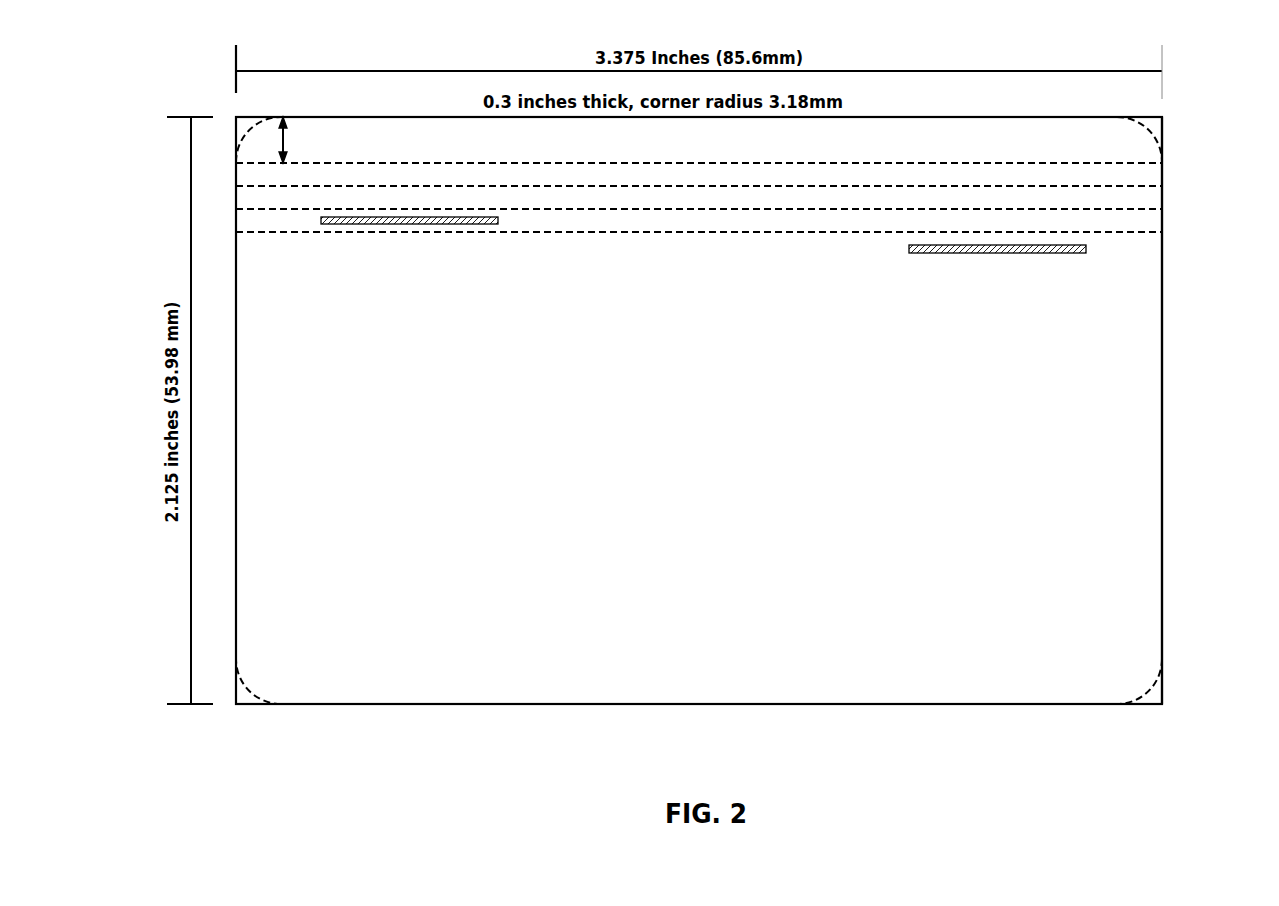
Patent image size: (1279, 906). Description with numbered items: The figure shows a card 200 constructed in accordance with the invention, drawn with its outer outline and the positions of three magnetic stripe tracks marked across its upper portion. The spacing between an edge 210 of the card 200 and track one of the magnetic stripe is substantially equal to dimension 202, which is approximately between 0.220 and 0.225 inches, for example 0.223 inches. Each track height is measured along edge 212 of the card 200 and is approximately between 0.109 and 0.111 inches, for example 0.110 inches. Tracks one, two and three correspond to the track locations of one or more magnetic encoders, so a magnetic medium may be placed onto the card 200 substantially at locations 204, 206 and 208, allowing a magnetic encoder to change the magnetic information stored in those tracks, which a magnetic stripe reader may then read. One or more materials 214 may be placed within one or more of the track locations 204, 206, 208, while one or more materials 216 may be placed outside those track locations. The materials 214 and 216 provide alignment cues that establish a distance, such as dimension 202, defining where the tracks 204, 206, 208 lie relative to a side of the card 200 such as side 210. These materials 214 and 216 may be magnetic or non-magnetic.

The card 200 is at (1198, 451).
The dimension 202 is at (1172, 117).
The track location 204 is at (1157, 171).
The track location 206 is at (1157, 196).
The track location 208 is at (1157, 222).
The edge 210 is at (883, 113).
The edge 212 is at (1162, 300).
The material 214 is at (498, 220).
The material 216 is at (1086, 249).